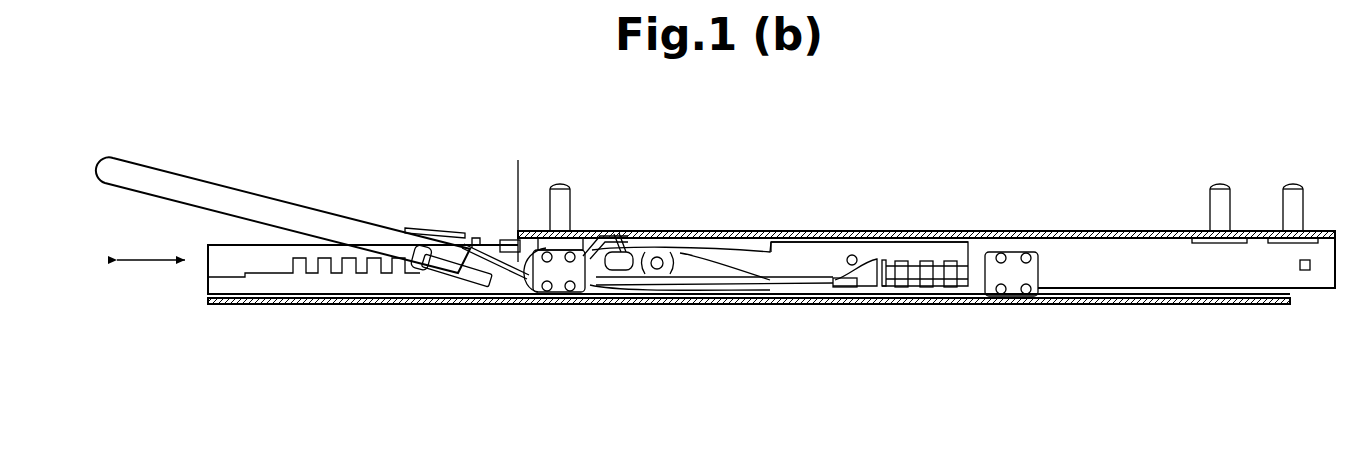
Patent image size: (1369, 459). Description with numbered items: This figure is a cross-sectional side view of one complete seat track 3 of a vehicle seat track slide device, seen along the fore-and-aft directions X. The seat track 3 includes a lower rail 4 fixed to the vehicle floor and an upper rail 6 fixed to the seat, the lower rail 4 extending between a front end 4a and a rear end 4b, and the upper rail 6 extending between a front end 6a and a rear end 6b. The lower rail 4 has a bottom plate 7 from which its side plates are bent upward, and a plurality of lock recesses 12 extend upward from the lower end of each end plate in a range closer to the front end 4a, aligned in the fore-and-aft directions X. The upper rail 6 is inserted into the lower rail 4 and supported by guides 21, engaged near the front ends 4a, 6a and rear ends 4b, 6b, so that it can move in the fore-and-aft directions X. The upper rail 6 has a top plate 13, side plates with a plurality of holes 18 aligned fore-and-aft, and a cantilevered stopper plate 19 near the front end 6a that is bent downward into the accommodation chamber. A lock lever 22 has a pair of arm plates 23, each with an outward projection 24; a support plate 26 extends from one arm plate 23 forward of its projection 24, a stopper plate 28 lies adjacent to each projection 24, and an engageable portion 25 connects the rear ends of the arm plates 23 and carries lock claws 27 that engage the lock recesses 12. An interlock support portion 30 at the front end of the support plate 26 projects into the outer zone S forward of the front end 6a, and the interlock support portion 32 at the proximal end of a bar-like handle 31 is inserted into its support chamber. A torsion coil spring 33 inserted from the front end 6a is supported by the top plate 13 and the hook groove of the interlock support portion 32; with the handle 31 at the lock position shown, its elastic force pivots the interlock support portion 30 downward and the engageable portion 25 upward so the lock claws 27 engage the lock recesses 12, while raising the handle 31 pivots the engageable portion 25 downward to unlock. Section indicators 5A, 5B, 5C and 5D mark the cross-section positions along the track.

The seat track 3 is at (1127, 197).
The lower rail 4 is at (749, 308).
The front end 4a is at (210, 335).
The rear end 4b is at (1290, 338).
The upper rail 6 is at (926, 233).
The front end 6a is at (541, 222).
The rear end 6b is at (1267, 213).
The bottom plate 7 is at (749, 330).
The lock recesses 12 is at (320, 308).
The top plate 13 is at (926, 209).
The holes 18 is at (945, 317).
The stopper plate 19 is at (632, 217).
The guides 21 is at (810, 299).
The lock lever 22 is at (736, 301).
The arm plates 23 is at (680, 295).
The projection 24 is at (657, 300).
The engageable portion 25 is at (869, 237).
The support plate 26 is at (512, 244).
The lock claws 27 is at (929, 240).
The stopper plate 28 is at (651, 233).
The interlock support portion 30 is at (435, 209).
The handle 31 is at (283, 199).
The interlock support portion 32 is at (451, 296).
The torsion coil spring 33 is at (495, 293).
The outer zone S is at (507, 209).
The fore-and-aft directions X is at (151, 234).
The section line 5A is at (658, 181).
The section line 5B is at (624, 181).
The section line 5C is at (543, 181).
The section line 5D is at (853, 143).